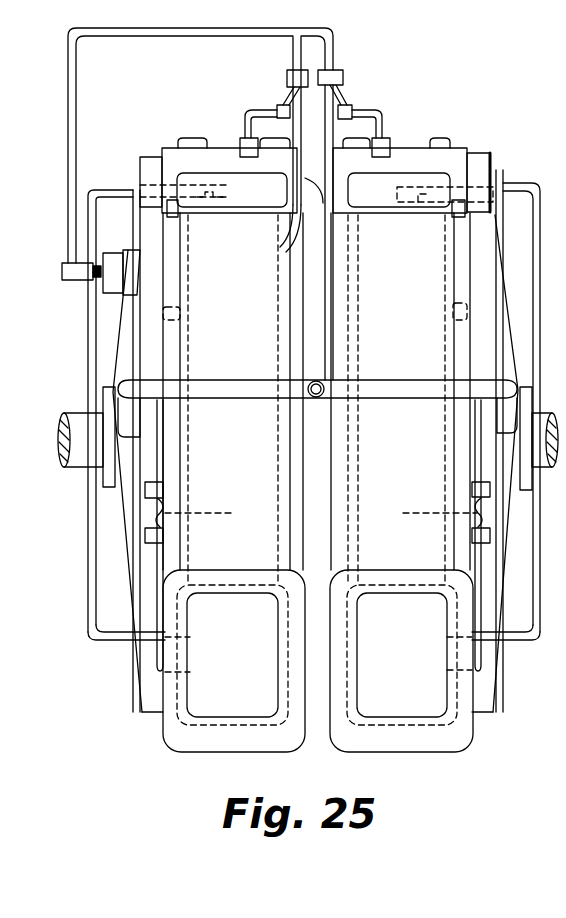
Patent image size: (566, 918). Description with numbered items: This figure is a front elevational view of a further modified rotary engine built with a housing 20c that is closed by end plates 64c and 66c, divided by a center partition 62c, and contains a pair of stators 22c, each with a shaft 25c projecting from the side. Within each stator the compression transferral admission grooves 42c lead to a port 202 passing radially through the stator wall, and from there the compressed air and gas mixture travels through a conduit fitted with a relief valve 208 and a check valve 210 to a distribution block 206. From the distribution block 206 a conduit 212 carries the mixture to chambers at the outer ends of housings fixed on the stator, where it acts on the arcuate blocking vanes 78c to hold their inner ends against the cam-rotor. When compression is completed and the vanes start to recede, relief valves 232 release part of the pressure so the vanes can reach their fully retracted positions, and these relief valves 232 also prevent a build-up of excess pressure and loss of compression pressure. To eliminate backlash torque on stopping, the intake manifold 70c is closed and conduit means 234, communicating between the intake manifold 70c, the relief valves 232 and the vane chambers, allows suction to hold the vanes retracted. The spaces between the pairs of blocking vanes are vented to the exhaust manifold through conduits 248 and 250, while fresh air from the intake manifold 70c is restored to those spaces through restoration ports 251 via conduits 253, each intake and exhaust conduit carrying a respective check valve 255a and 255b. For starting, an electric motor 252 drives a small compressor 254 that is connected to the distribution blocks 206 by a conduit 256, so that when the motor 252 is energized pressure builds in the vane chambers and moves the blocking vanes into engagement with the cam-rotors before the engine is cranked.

The housing 20c is at (154, 141).
The stator 22c is at (197, 163).
The shaft 25c is at (70, 447).
The transferral admission groove 42c is at (240, 180).
The center partition 62c is at (317, 325).
The end plate 64c is at (158, 150).
The end plate 66c is at (481, 153).
The intake manifold 70c is at (227, 382).
The arcuate vane 78c is at (352, 740).
The port 202 is at (270, 208).
The distribution block 206 is at (297, 70).
The relief valve 208 is at (245, 137).
The check valve 210 is at (282, 106).
The conduit 212 is at (280, 247).
The relief valve 232 is at (180, 220).
The conduit means 234 is at (133, 343).
The conduit 248 is at (152, 658).
The conduit 250 is at (90, 342).
The restoration port 251 is at (215, 510).
The electric motor 252 is at (110, 283).
The conduit 253 is at (163, 462).
The compressor 254 is at (62, 272).
The check valve 255a is at (163, 490).
The check valve 255b is at (163, 535).
The conduit 256 is at (68, 102).